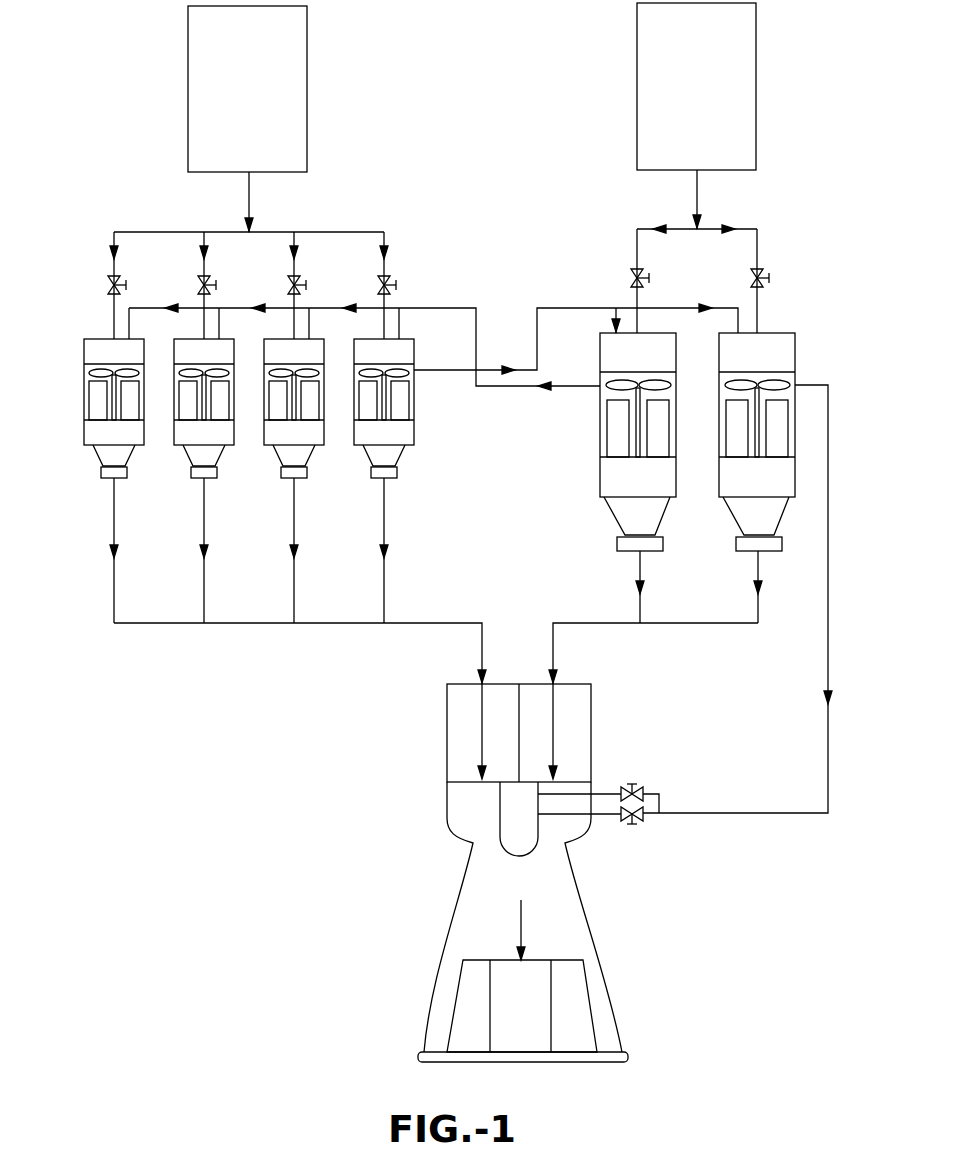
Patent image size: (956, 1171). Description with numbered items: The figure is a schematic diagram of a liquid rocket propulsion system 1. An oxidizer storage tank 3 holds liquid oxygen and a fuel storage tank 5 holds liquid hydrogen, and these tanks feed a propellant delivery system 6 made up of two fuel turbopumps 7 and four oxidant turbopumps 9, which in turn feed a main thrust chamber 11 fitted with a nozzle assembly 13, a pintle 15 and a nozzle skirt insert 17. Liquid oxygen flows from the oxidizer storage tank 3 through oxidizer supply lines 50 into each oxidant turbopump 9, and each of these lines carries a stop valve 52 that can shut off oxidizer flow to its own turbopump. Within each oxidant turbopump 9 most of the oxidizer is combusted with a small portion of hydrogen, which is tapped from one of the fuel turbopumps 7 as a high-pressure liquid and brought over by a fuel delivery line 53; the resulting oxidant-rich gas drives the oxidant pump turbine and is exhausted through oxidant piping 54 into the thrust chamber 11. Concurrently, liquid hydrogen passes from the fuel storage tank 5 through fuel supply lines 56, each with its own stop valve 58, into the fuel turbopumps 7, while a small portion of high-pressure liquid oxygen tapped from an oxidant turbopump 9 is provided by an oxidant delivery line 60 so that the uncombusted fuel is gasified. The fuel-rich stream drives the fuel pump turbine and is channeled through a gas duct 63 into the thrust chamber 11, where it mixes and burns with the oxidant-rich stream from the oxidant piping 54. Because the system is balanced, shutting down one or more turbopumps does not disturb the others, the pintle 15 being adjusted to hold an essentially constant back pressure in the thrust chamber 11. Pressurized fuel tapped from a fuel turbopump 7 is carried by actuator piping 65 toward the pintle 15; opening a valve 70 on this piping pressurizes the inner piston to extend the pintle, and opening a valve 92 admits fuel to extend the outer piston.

The liquid rocket propulsion system 1 is at (110, 160).
The oxidizer storage tank 3 is at (307, 78).
The fuel storage tank 5 is at (757, 62).
The propellant delivery system 6 is at (448, 226).
The fuel turbopumps 7 is at (720, 457).
The oxidant turbopumps 9 is at (175, 447).
The main thrust chamber 11 is at (447, 737).
The nozzle assembly 13 is at (437, 970).
The pintle 15 is at (512, 843).
The nozzle skirt insert 17 is at (538, 1038).
The oxidizer supply lines 50 is at (316, 232).
The stop valve 52 is at (197, 293).
The fuel delivery line 53 is at (437, 308).
The oxidant piping 54 is at (116, 610).
The fuel supply lines 56 is at (700, 202).
The stop valve 58 is at (751, 288).
The oxidant delivery line 60 is at (573, 308).
The gas duct 63 is at (755, 616).
The actuator piping 65 is at (828, 650).
The valve 70 is at (642, 787).
The valve 92 is at (641, 821).